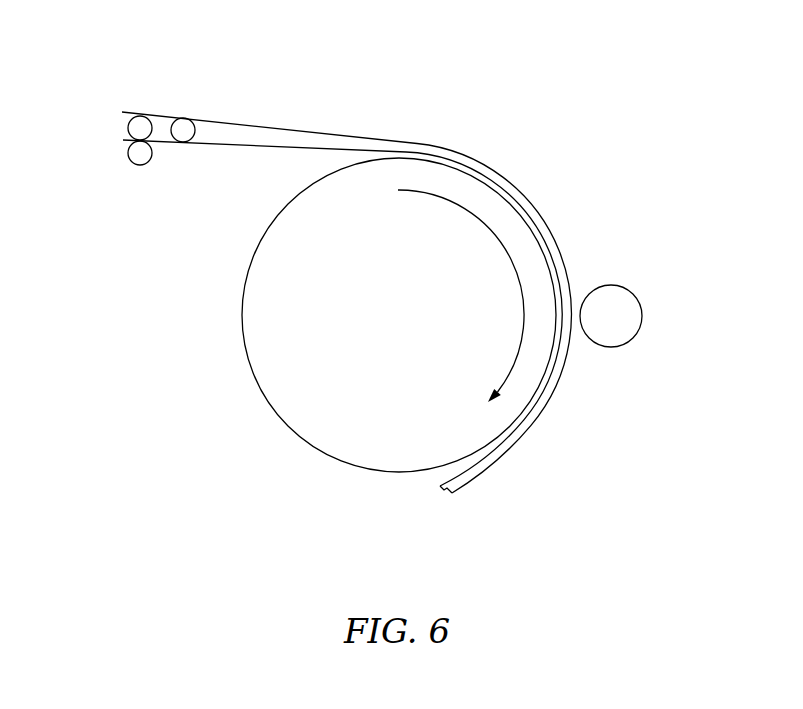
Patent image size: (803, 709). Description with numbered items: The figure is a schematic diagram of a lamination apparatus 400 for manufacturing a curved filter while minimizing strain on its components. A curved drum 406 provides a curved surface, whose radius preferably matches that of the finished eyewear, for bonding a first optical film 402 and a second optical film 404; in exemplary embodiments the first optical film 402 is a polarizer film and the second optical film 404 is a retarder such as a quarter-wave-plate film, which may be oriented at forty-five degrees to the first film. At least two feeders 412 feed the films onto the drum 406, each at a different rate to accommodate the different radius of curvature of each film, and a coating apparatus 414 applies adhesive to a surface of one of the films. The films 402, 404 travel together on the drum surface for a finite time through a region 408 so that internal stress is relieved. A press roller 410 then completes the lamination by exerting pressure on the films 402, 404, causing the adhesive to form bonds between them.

The lamination apparatus 400 is at (467, 75).
The first optical film 402 is at (231, 157).
The second optical film 404 is at (241, 112).
The curved drum 406 is at (380, 330).
The region 408 is at (354, 277).
The press roller 410 is at (641, 316).
The feeders 412 is at (124, 151).
The coating apparatus 414 is at (183, 127).